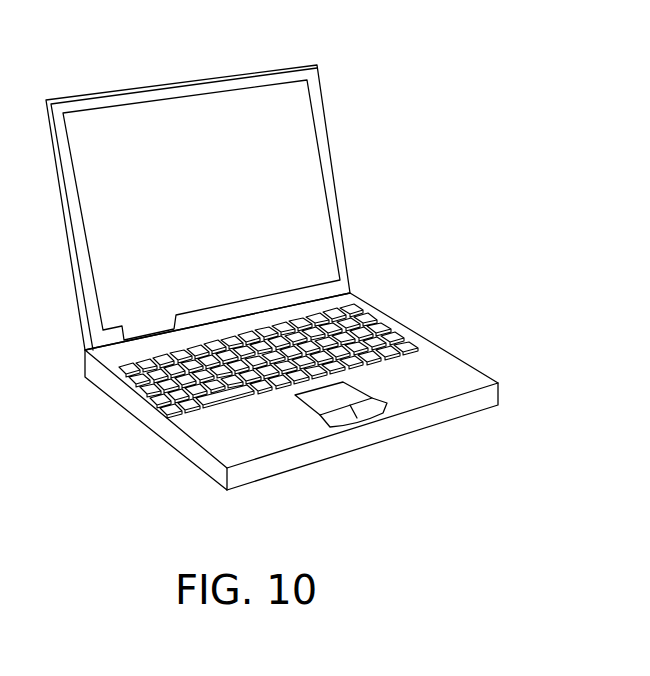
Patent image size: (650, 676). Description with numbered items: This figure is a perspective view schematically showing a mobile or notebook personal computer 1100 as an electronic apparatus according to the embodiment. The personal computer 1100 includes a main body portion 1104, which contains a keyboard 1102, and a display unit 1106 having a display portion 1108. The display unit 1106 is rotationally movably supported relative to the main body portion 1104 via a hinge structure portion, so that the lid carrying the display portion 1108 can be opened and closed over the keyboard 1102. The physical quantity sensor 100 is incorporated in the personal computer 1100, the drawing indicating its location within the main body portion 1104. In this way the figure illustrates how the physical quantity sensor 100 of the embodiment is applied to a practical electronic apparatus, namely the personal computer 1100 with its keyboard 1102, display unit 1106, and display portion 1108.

The personal computer 1100 is at (344, 54).
The display unit 1106 is at (335, 152).
The display portion 1108 is at (197, 112).
The main body portion 1104 is at (282, 442).
The keyboard 1102 is at (378, 320).
The physical quantity sensor 100 is at (440, 375).